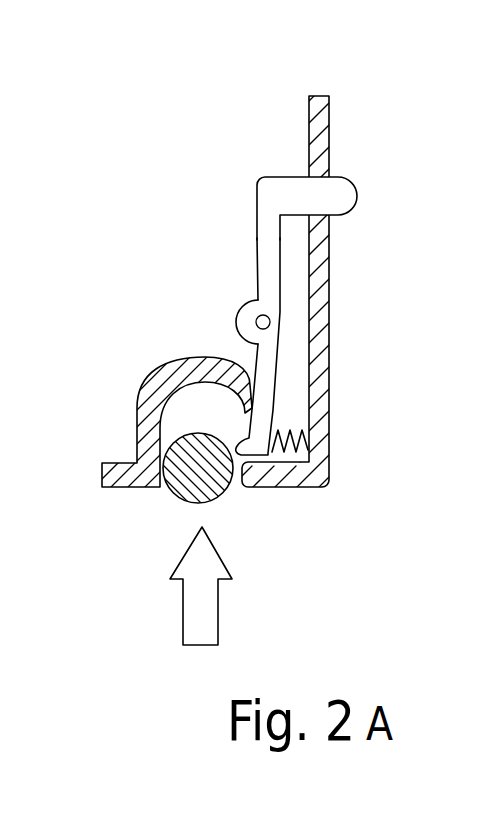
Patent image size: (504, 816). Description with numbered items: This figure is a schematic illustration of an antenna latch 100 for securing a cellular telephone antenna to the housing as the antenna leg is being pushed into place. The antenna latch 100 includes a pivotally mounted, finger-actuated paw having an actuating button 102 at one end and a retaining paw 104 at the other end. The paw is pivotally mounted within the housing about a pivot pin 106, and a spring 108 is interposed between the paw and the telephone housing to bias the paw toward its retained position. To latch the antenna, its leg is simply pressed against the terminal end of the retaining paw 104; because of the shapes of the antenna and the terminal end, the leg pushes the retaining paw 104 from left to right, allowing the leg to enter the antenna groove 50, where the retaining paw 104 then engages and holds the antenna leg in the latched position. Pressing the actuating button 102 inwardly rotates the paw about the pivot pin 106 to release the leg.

The antenna latch 100 is at (212, 166).
The actuating button 102 is at (343, 190).
The retaining paw 104 is at (248, 445).
The pivot pin 106 is at (263, 322).
The spring 108 is at (306, 418).
The antenna groove 50 is at (197, 407).